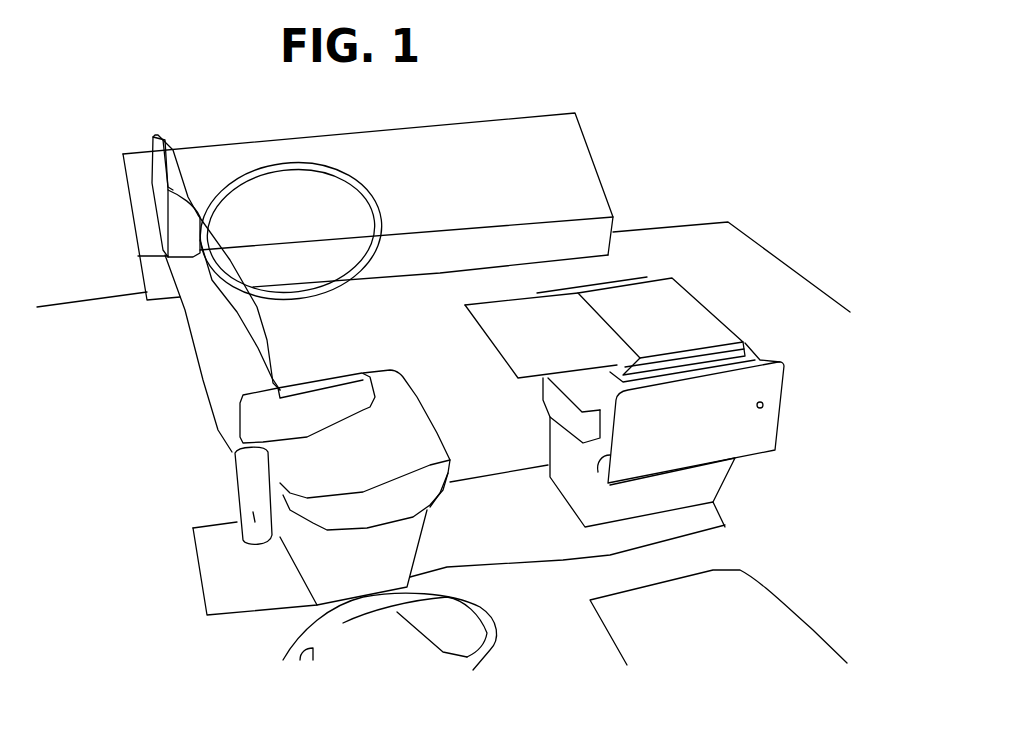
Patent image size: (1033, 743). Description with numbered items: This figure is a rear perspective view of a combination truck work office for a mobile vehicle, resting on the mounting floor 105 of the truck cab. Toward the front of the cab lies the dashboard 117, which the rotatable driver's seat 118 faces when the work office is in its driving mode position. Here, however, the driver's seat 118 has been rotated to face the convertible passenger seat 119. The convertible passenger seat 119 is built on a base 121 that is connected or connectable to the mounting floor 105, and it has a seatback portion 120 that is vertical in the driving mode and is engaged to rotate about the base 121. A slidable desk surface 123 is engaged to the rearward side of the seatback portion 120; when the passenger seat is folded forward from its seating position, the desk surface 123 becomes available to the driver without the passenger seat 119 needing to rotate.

The mounting floor 105 is at (625, 572).
The dashboard 117 is at (560, 153).
The rotatable driver's seat 118 is at (233, 485).
The convertible passenger seat 119 is at (788, 406).
The seatback portion 120 is at (640, 275).
The base 121 is at (572, 483).
The slidable desk surface 123 is at (673, 315).